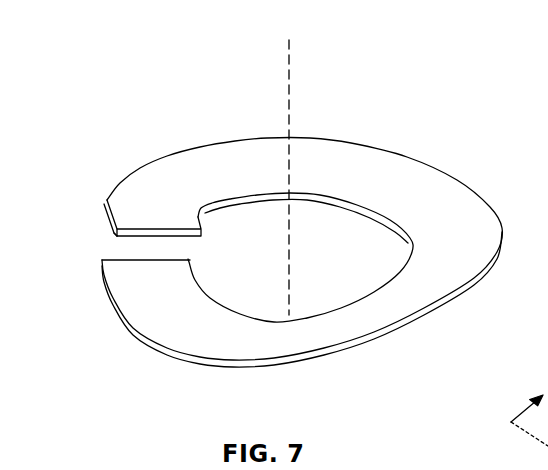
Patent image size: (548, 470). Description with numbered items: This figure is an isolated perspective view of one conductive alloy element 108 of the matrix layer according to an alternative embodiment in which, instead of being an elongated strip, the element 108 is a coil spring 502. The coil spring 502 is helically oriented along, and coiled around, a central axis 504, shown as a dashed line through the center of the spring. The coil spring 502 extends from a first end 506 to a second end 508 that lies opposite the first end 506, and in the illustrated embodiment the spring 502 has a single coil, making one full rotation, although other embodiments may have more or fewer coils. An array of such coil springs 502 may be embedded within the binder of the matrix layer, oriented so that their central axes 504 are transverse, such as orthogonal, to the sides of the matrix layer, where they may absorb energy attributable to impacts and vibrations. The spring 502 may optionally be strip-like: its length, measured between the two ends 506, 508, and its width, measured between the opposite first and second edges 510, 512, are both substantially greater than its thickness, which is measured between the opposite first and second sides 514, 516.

The conductive alloy element 108 is at (351, 143).
The coil spring 502 is at (431, 178).
The central axis 504 is at (287, 70).
The first end 506 is at (148, 238).
The second end 508 is at (174, 257).
The first edge 510 is at (110, 231).
The second edge 512 is at (224, 209).
The first side 514 is at (187, 167).
The second side 516 is at (122, 238).